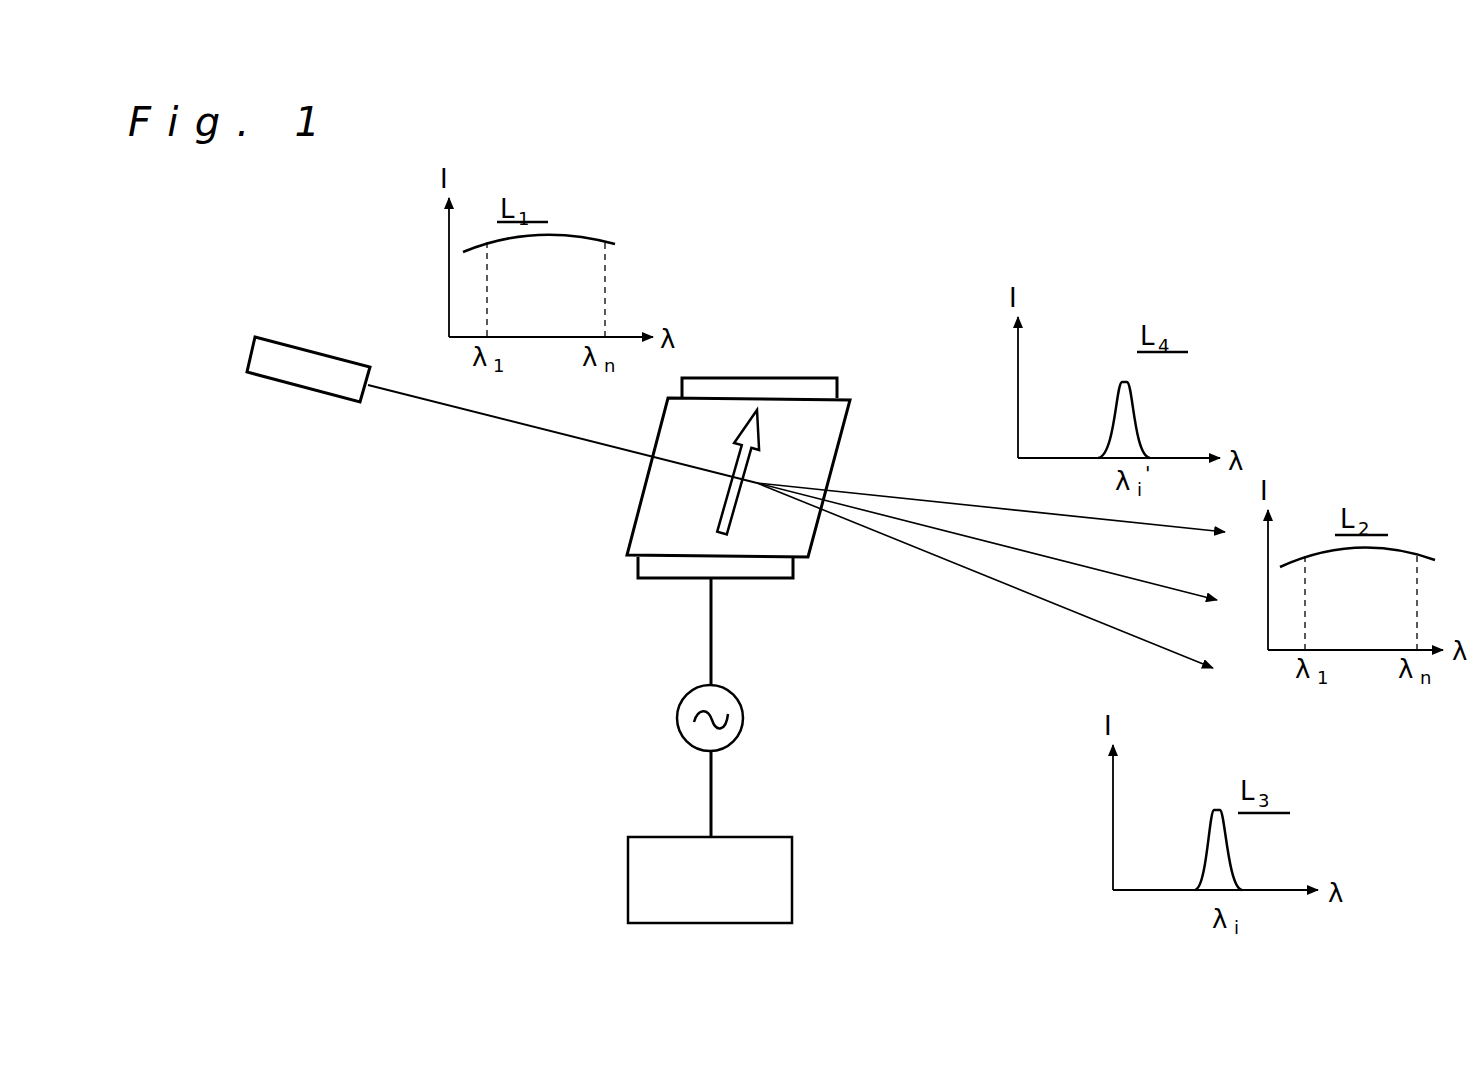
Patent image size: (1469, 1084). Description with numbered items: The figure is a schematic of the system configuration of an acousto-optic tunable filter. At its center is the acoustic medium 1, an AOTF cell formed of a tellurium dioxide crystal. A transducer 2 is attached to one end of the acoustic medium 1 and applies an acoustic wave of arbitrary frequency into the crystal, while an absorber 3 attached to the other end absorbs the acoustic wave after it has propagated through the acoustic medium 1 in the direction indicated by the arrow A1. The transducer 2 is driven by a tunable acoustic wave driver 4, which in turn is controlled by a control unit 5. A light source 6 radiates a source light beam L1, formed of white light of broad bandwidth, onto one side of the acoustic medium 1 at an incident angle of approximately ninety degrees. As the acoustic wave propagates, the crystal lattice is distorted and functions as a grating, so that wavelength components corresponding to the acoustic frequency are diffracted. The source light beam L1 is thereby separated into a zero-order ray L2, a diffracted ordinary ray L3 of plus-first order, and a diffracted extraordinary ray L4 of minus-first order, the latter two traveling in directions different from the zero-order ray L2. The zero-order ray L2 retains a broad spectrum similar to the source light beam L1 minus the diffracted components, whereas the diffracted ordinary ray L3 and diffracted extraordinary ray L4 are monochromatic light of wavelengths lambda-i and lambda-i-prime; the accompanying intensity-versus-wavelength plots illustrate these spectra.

The acoustic medium 1 is at (627, 540).
The transducer 2 is at (793, 578).
The absorber 3 is at (837, 378).
The tunable acoustic wave driver 4 is at (743, 718).
The control unit 5 is at (792, 880).
The light source 6 is at (262, 372).
The arrow A1 is at (750, 456).
The source light beam L1 is at (432, 403).
The 0-order ray L2 is at (1066, 562).
The diffracted ordinary ray L3 is at (1025, 596).
The diffracted extraordinary ray L4 is at (925, 499).